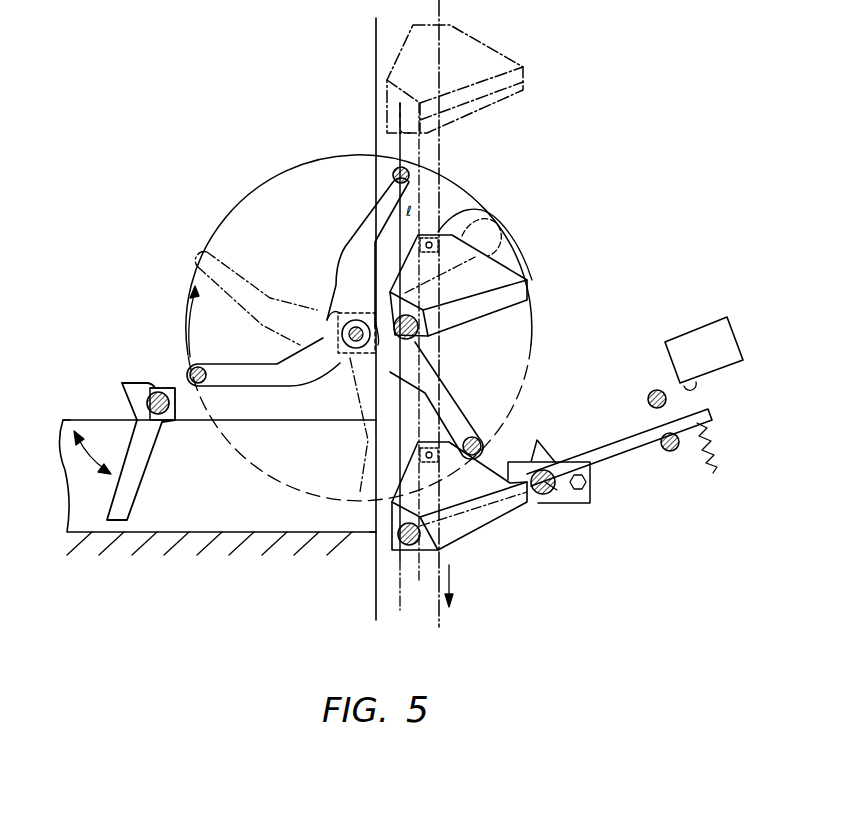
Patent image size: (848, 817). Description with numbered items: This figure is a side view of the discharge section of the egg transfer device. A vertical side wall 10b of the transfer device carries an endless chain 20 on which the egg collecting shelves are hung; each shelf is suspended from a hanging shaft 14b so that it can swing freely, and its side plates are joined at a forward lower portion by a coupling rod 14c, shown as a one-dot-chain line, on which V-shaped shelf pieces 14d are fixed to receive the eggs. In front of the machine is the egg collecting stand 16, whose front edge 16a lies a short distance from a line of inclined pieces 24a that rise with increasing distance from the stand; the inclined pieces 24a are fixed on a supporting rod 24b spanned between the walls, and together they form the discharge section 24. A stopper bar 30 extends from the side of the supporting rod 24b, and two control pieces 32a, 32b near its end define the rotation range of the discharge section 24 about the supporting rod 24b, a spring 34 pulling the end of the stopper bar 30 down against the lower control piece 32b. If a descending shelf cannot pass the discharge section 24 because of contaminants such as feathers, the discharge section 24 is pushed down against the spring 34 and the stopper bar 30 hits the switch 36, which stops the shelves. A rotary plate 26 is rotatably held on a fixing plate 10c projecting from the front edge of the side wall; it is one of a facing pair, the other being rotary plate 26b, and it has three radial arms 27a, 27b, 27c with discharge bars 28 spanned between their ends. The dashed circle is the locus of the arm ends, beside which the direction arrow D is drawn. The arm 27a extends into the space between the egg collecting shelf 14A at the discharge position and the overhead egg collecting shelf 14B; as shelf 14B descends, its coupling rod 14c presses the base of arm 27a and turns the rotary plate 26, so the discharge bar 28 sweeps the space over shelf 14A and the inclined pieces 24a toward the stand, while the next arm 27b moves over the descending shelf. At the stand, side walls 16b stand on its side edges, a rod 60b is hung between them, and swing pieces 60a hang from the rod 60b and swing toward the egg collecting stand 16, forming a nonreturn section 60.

The side wall 10b is at (385, 590).
The fixing plate 10c is at (348, 358).
The egg collecting shelf at the discharge position 14A is at (478, 465).
The overhead egg collecting shelf 14B is at (472, 275).
The hanging shaft 14b is at (465, 208).
The coupling rod 14c is at (527, 95).
The shelf piece 14d is at (527, 286).
The egg collecting stand 16 is at (92, 545).
The front edge 16a is at (378, 548).
The side wall 16b is at (63, 420).
The chain 20 is at (440, 82).
The discharge section 24 is at (548, 455).
The inclined piece 24a is at (537, 494).
The supporting rod 24b is at (557, 490).
The rotary plate 26 is at (340, 245).
The rotary plate 26b is at (335, 297).
The arm 27a is at (437, 392).
The arm 27b is at (410, 172).
The arm 27c is at (230, 275).
The discharge bar 28 is at (200, 367).
The stopper bar 30 is at (615, 460).
The control piece 32a is at (660, 390).
The control piece 32b is at (676, 450).
The spring 34 is at (712, 425).
The switch 36 is at (700, 330).
The nonreturn section 60 is at (145, 383).
The swing piece 60a is at (122, 383).
The rod 60b is at (167, 386).
The direction of rotation D is at (540, 377).